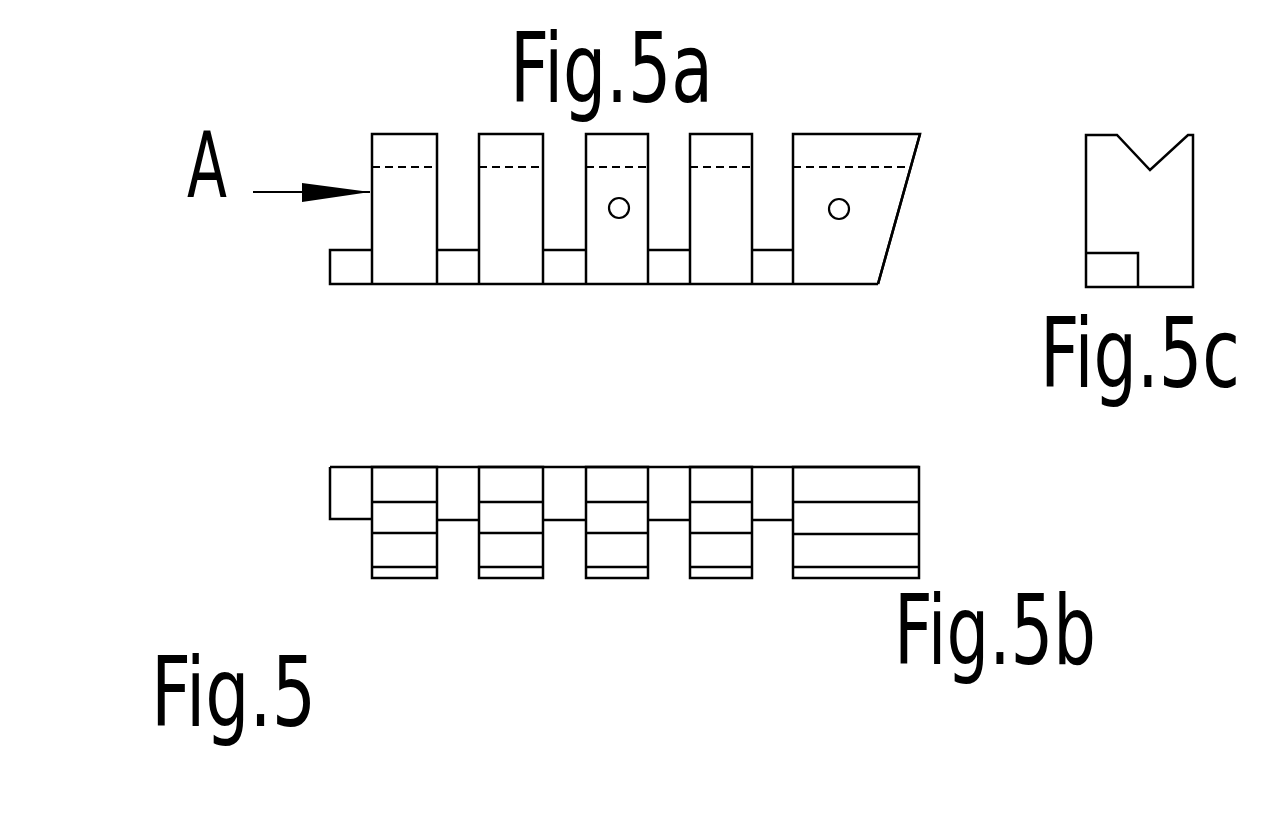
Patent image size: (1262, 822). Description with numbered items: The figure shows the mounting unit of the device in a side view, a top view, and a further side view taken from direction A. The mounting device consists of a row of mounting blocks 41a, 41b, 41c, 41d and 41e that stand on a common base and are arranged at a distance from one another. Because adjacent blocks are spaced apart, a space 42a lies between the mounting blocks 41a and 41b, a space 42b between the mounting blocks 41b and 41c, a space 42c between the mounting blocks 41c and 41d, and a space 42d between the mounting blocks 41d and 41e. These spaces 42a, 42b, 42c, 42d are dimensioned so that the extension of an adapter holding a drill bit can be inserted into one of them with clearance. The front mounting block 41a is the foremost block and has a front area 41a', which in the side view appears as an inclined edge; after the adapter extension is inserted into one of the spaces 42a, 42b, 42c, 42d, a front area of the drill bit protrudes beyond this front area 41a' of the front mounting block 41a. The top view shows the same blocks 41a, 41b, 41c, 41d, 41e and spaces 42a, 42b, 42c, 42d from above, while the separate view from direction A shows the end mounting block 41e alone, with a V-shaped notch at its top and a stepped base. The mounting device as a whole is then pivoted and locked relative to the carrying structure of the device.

In FIG. 5A, the front mounting block 41a is at (856, 240).
In FIG. 5B, the front mounting block 41a is at (856, 584).
In FIG. 5A, the front area of front mounting block 41a' is at (944, 188).
In FIG. 5A, the mounting block 41b is at (722, 253).
In FIG. 5B, the mounting block 41b is at (717, 555).
In FIG. 5A, the mounting block 41c is at (612, 260).
In FIG. 5B, the mounting block 41c is at (607, 560).
In FIG. 5A, the mounting block 41d is at (520, 265).
In FIG. 5B, the mounting block 41d is at (520, 553).
In FIG. 5A, the mounting block 41e is at (406, 260).
In FIG. 5B, the mounting block 41e is at (417, 558).
In FIG. 5C, the mounting block 41e is at (1139, 211).
In FIG. 5A, the space 42a is at (793, 207).
In FIG. 5B, the space 42a is at (772, 542).
In FIG. 5A, the space 42b is at (689, 207).
In FIG. 5B, the space 42b is at (669, 542).
In FIG. 5A, the space 42c is at (583, 207).
In FIG. 5B, the space 42c is at (564, 542).
In FIG. 5A, the space 42d is at (477, 207).
In FIG. 5B, the space 42d is at (458, 542).